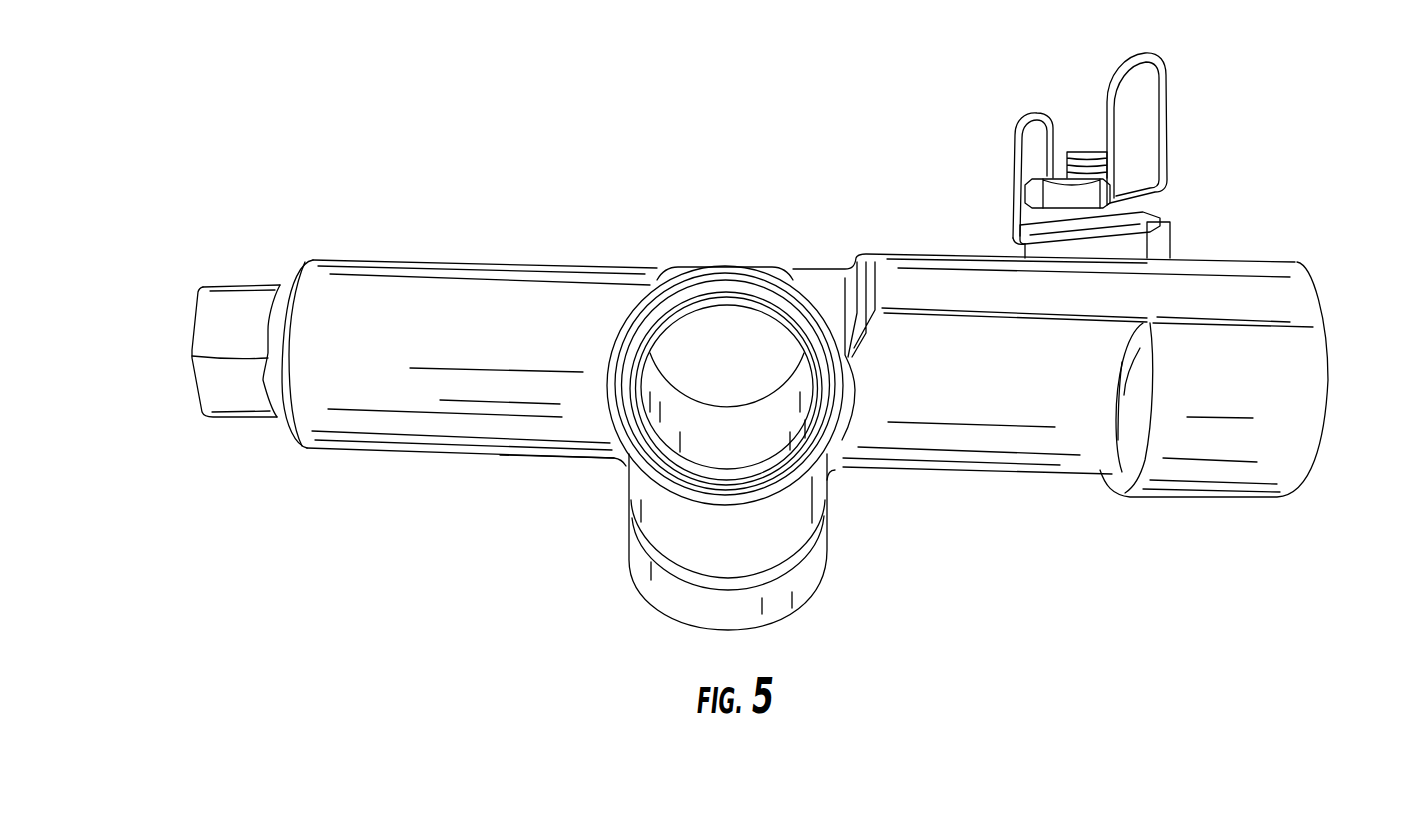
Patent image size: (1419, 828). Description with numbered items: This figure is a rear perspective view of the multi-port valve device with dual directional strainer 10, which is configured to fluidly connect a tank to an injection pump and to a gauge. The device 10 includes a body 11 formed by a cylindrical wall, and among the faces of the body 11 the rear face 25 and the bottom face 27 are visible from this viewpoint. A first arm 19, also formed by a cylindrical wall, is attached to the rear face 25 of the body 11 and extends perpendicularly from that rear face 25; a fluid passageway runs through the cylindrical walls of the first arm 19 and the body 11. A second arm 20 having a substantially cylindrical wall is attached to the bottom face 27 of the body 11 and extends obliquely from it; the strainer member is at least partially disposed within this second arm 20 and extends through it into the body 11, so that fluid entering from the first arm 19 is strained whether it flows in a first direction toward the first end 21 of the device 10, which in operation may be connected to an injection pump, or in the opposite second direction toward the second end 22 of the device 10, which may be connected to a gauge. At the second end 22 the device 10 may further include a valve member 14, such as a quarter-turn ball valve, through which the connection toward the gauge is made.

The multi-port valve device with dual directional strainer 10 is at (755, 338).
The body 11 is at (573, 292).
The valve member 14 is at (1185, 134).
The first arm 19 is at (767, 292).
The second arm 20 is at (782, 510).
The first end 21 is at (183, 357).
The second end 22 is at (1335, 367).
The rear face 25 is at (473, 407).
The bottom face 27 is at (557, 458).